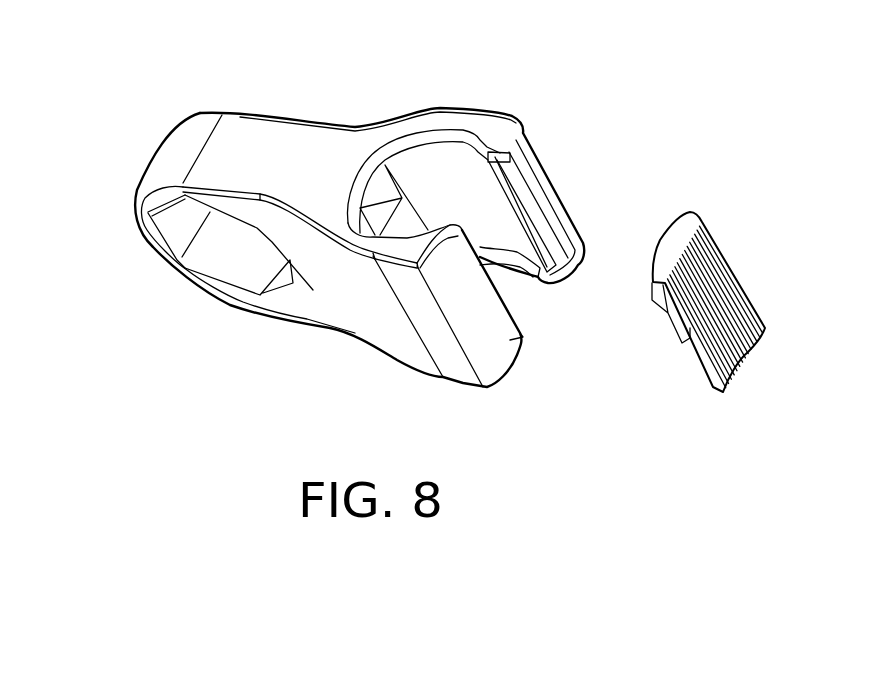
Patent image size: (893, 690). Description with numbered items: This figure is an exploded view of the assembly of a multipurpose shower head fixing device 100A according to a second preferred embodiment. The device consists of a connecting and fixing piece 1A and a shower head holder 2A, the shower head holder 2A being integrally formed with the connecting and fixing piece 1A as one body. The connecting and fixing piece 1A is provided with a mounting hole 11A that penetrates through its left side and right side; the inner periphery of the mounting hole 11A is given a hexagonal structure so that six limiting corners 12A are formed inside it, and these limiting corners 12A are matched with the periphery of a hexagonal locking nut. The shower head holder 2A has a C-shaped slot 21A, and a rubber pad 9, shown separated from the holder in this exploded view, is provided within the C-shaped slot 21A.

The multipurpose shower head fixing device 100A is at (338, 198).
The connecting and fixing piece 1A is at (235, 140).
The shower head holder 2A is at (505, 145).
The C-shaped slot 21A is at (478, 202).
The mounting hole 11A is at (233, 258).
The limiting corner 12A is at (153, 247).
The rubber pad 9 is at (723, 277).